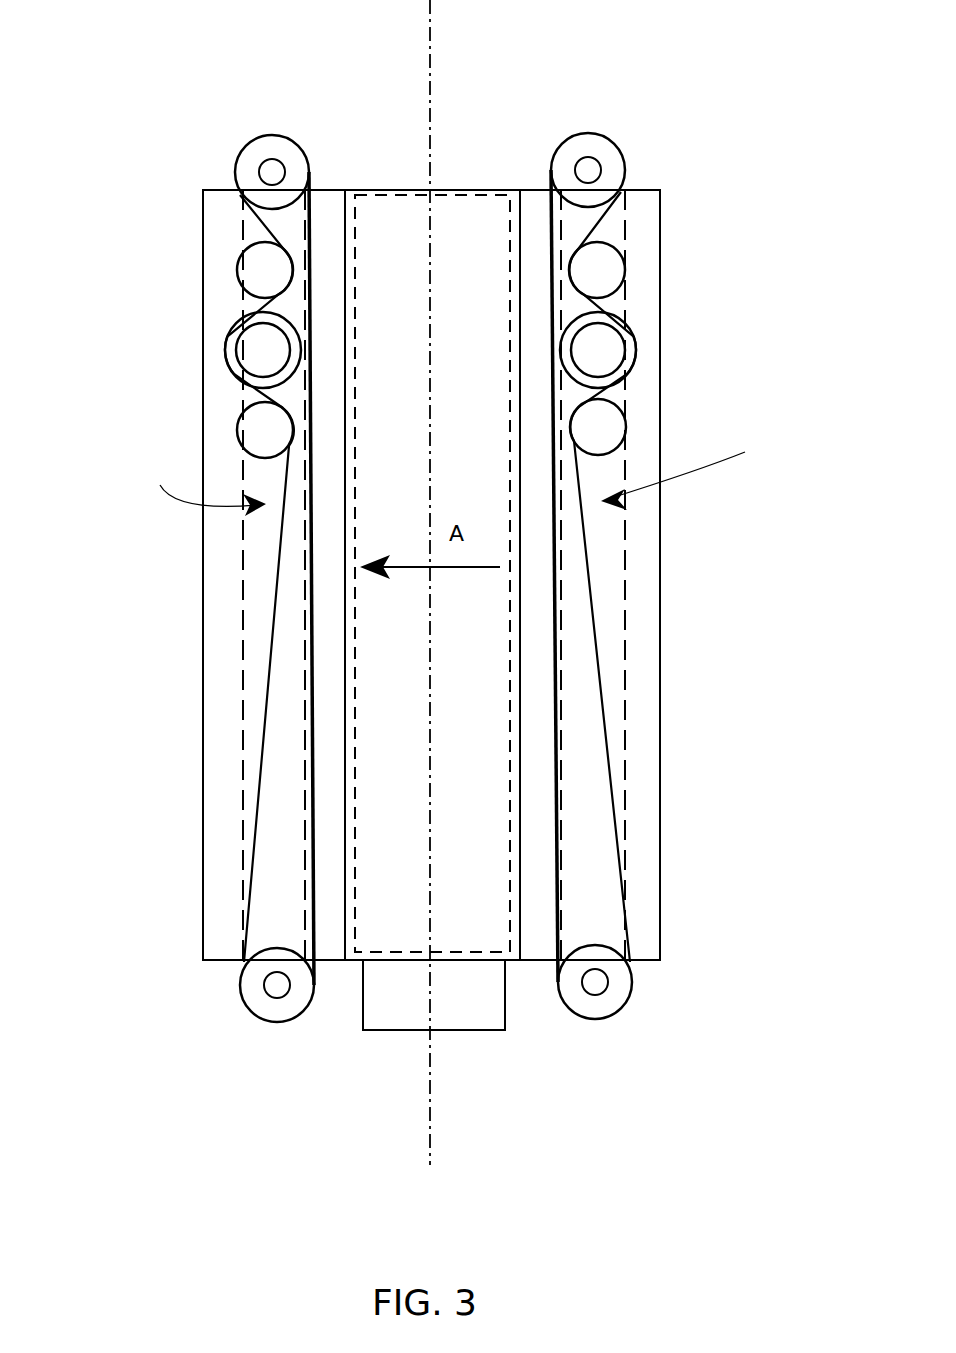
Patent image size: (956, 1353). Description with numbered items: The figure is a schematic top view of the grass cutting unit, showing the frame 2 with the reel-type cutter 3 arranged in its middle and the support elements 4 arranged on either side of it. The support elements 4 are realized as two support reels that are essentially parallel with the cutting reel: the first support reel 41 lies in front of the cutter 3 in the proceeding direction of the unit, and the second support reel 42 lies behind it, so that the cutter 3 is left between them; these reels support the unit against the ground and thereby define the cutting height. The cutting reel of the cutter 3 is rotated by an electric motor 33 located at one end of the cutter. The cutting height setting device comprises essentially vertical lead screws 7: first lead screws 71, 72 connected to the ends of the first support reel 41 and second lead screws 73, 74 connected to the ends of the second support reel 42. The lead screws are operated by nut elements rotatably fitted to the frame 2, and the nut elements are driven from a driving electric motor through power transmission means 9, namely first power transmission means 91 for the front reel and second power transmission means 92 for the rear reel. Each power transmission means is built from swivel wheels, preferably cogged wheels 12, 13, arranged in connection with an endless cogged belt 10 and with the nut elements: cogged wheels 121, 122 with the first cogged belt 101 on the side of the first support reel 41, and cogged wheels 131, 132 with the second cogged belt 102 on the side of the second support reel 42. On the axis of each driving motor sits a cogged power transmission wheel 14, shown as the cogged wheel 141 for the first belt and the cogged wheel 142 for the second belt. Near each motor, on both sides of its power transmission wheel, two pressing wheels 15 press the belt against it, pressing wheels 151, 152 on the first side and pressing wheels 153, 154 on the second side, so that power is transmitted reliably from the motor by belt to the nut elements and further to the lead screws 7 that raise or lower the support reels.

The frame 2 is at (203, 377).
The cutter 3 is at (488, 217).
The electric motor 33 is at (470, 1022).
The support elements 4 is at (449, 577).
The first support reel 41 is at (243, 758).
The second support reel 42 is at (628, 775).
The lead screws 7 is at (443, 564).
The first lead screw 71 is at (277, 985).
The first lead screw 72 is at (272, 172).
The second lead screw 73 is at (595, 982).
The second lead screw 74 is at (588, 170).
The power transmission means 9 is at (449, 469).
The first power transmission means 91 is at (190, 484).
The second power transmission means 92 is at (692, 466).
The cogged belt 10 is at (433, 701).
The first cogged belt 101 is at (273, 640).
The second cogged belt 102 is at (590, 608).
The cogged wheels 12 is at (201, 571).
The cogged wheel 121 is at (250, 985).
The cogged wheel 122 is at (238, 162).
The cogged wheels 13 is at (675, 576).
The cogged wheel 131 is at (618, 982).
The cogged wheel 132 is at (622, 190).
The cogged wheel 14 is at (434, 325).
The cogged wheel 141 is at (240, 347).
The cogged wheel 142 is at (630, 347).
The pressing wheels 15 is at (429, 328).
The pressing wheel 151 is at (255, 432).
The pressing wheel 152 is at (247, 262).
The pressing wheel 153 is at (610, 427).
The pressing wheel 154 is at (603, 277).